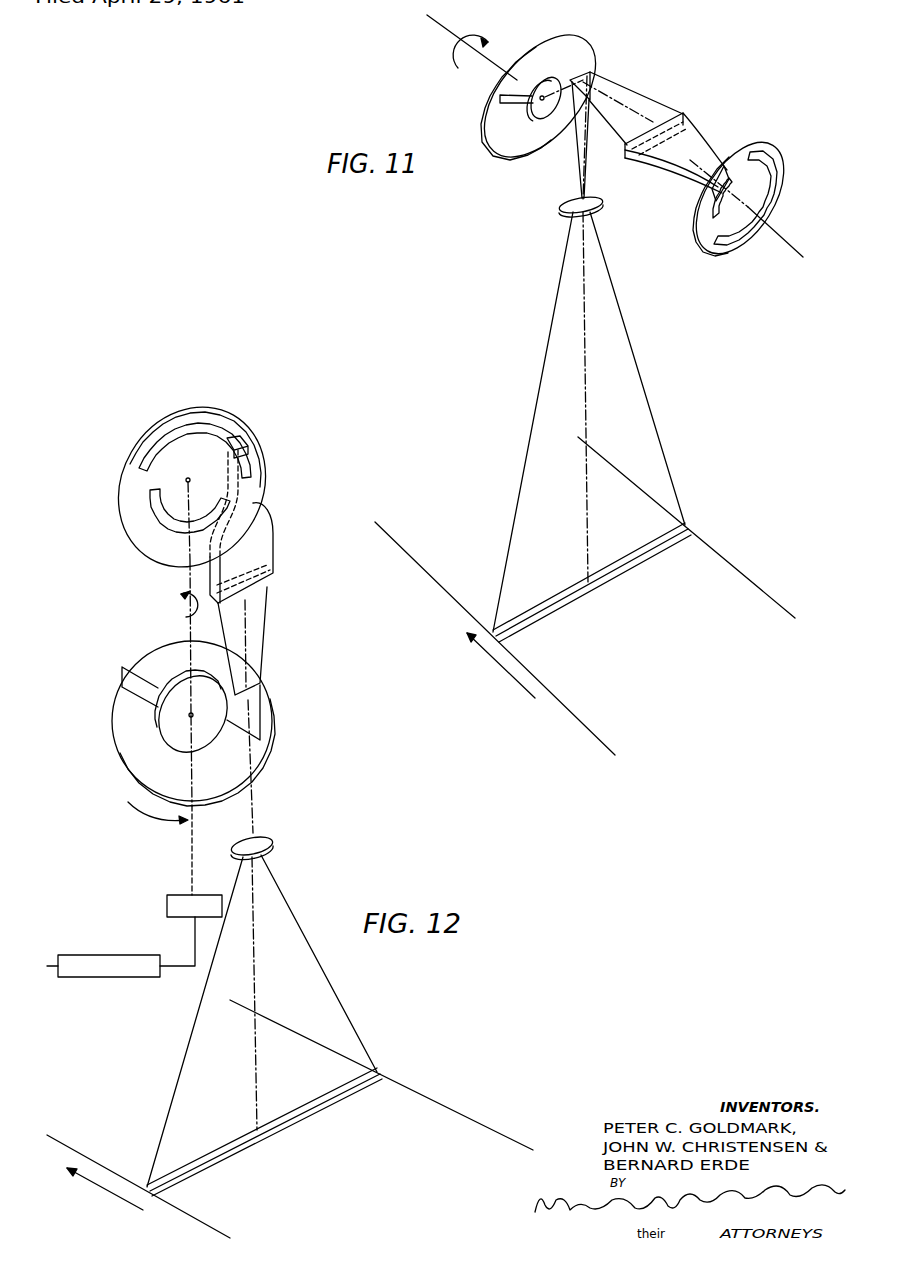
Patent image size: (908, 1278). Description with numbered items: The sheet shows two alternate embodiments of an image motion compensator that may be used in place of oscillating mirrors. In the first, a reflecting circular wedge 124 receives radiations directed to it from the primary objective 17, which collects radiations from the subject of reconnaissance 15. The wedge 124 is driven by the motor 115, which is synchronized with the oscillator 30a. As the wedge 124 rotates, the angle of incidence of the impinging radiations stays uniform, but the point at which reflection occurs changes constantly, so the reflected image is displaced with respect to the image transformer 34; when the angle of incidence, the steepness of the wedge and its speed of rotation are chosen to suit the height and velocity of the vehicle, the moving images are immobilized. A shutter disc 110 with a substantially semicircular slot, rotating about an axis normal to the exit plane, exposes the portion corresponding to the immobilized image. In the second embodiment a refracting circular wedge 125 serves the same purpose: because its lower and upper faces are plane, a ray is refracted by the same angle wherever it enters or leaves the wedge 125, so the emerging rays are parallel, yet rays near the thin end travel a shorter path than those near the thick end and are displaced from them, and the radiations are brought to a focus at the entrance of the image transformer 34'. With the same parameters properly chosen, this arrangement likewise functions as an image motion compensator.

In FIG. 11, the reflecting circular wedge 124 is at (528, 160).
In FIG. 11, the primary objective 17 is at (564, 217).
In FIG. 12, the primary objective 17 is at (273, 847).
In FIG. 11, the image transformer device 34 is at (677, 165).
In FIG. 11, the shutter disc 110 is at (719, 253).
In FIG. 12, the shutter disc 110 is at (265, 462).
In FIG. 11, the subject of reconnaissance 15 is at (593, 592).
In FIG. 12, the subject of reconnaissance 15 is at (289, 1121).
In FIG. 12, the refracting circular wedge 125 is at (112, 743).
In FIG. 12, the image transformer 34' is at (265, 519).
In FIG. 12, the motor 115 is at (166, 899).
In FIG. 12, the oscillator 30a is at (118, 951).